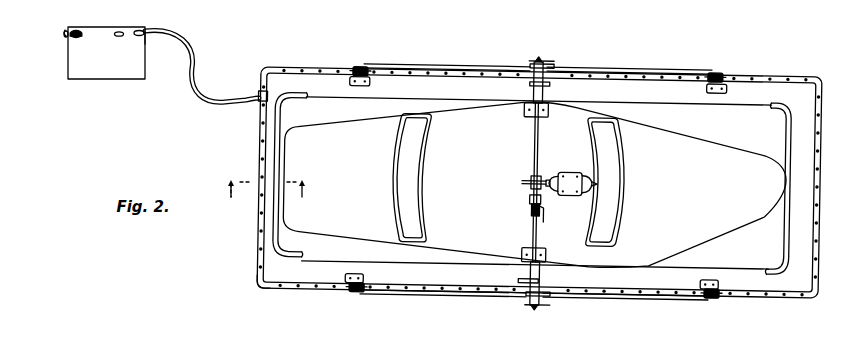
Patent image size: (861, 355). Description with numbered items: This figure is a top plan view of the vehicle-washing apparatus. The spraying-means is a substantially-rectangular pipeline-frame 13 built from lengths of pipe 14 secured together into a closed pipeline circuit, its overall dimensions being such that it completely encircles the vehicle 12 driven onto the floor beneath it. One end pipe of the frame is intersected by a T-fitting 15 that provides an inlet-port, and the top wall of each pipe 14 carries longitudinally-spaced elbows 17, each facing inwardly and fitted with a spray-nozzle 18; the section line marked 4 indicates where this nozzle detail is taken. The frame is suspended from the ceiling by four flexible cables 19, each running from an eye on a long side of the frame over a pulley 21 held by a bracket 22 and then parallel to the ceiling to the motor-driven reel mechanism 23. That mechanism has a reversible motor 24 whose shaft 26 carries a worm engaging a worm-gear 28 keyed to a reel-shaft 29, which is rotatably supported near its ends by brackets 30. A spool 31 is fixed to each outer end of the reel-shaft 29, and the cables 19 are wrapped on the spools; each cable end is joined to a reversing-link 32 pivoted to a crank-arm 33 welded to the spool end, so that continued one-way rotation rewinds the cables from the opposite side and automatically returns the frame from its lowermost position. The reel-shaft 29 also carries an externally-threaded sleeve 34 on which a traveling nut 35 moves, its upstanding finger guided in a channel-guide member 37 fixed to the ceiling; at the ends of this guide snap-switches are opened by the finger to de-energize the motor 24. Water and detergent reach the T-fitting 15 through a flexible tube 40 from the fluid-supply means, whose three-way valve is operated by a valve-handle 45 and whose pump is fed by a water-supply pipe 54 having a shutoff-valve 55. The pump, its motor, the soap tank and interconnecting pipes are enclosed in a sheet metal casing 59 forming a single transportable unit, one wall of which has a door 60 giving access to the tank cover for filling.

The section line 4- 4 is at (267, 200).
The vehicle 12 is at (455, 181).
The pipeline-frame 13 is at (257, 288).
The pipe 14 is at (306, 68).
The T-fitting 15 is at (265, 100).
The elbow 17 is at (283, 160).
The spray-nozzle 18 is at (262, 160).
The flexible cable 19 is at (587, 70).
The pulley 21 is at (361, 69).
The bracket 22 is at (369, 85).
The reel mechanism 23 is at (541, 172).
The reversible motor 24 is at (575, 197).
The motor shaft 26 is at (547, 188).
The worm-gear 28 is at (522, 182).
The reel-shaft 29 is at (533, 143).
The bracket 30 is at (523, 110).
The spool 31 is at (532, 61).
The reversing-link 32 is at (556, 66).
The crank-arm 33 is at (540, 61).
The externally-threaded sleeve 34 is at (532, 211).
The traveling nut 35 is at (545, 221).
The channel-guide member 37 is at (530, 199).
The flexible tube 40 is at (194, 99).
The valve-handle 45 is at (121, 31).
The water-supply pipe 54 is at (78, 31).
The shutoff-valve 55 is at (65, 32).
The sheet metal casing 59 is at (115, 80).
The door 60 is at (146, 42).